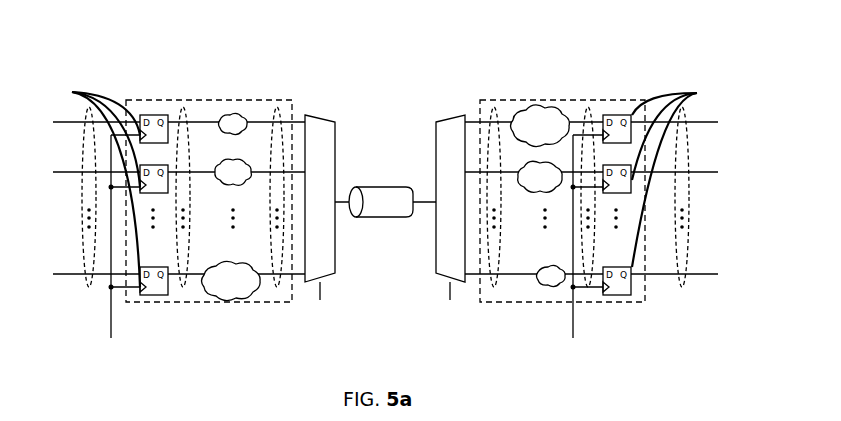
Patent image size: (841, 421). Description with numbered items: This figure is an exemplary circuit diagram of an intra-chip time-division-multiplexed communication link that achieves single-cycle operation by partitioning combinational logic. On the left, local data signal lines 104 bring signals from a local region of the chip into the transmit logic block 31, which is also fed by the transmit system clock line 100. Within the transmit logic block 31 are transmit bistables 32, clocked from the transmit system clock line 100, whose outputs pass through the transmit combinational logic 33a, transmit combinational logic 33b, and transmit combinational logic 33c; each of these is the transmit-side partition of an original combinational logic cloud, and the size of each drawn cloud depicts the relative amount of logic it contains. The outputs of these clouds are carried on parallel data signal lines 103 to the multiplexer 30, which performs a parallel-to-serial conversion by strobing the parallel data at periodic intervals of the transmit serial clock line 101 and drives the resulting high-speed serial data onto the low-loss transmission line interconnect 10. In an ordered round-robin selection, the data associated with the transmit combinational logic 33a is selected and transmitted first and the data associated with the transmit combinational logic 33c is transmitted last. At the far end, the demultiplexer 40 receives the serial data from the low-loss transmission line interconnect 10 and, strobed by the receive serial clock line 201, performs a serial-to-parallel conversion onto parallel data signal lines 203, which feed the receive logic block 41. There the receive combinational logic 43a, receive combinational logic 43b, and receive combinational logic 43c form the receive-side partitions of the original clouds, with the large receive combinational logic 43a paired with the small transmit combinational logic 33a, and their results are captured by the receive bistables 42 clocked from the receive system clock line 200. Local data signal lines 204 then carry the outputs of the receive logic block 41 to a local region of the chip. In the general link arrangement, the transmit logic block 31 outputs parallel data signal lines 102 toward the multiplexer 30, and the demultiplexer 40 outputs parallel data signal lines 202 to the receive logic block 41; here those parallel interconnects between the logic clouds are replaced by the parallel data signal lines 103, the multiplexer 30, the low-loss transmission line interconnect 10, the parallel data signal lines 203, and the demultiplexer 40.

The low-loss transmission line interconnect 10 is at (364, 186).
The multiplexer 30 is at (320, 122).
The transmit logic block 31 is at (139, 99).
The transmit bistables 32 is at (96, 187).
The transmit combinational logic 33a is at (221, 116).
The transmit combinational logic 33b is at (215, 160).
The transmit combinational logic 33c is at (205, 264).
The demultiplexer 40 is at (450, 122).
The receive logic block 41 is at (632, 99).
The receive bistables 42 is at (675, 177).
The receive combinational logic 43a is at (543, 108).
The receive combinational logic 43b is at (557, 162).
The receive combinational logic 43c is at (553, 266).
The transmit system clock line 100 is at (111, 332).
The transmit serial clock line 101 is at (320, 296).
The parallel data signal lines 102 is at (277, 291).
The parallel data signal lines 103 is at (182, 290).
The local data signal lines 104 is at (90, 289).
The receive system clock line 200 is at (573, 332).
The receive serial clock line 201 is at (450, 296).
The parallel data signal lines 202 is at (493, 289).
The parallel data signal lines 203 is at (587, 290).
The local data signal lines 204 is at (682, 288).